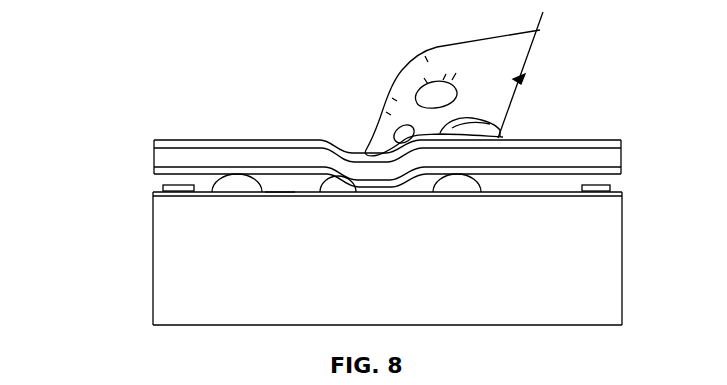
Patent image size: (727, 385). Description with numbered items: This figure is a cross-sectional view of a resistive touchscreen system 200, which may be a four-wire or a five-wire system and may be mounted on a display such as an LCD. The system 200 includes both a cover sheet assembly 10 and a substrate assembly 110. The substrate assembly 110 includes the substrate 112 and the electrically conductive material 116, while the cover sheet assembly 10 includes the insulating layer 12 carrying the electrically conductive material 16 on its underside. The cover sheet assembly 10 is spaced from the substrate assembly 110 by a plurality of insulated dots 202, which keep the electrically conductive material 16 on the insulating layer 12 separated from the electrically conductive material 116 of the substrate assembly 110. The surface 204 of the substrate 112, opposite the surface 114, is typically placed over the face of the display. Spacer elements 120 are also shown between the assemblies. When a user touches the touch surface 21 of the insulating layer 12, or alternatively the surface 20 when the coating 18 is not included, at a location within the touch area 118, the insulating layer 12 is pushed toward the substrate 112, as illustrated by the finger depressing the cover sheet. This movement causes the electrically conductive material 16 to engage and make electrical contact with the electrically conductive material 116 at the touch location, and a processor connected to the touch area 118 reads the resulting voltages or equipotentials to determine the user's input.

The resistive touchscreen system 200 is at (107, 78).
The cover sheet assembly 10 is at (165, 129).
The touch surface 21 is at (527, 139).
The coating 18 is at (237, 144).
The surface 20 is at (563, 148).
The insulating layer 12 is at (598, 158).
The electrically conductive material 16 is at (612, 172).
The touch area 118 is at (276, 190).
The spacer pad 120 is at (160, 187).
The electrically conductive material 116 is at (157, 193).
The surface 114 is at (622, 196).
The insulated dots 202 is at (238, 182).
The substrate assembly 110 is at (627, 258).
The substrate 112 is at (419, 306).
The surface 204 is at (500, 325).